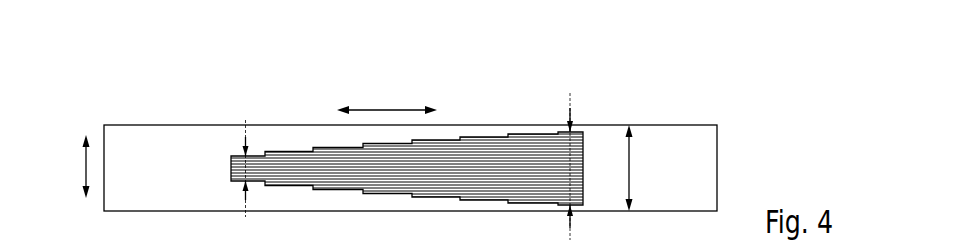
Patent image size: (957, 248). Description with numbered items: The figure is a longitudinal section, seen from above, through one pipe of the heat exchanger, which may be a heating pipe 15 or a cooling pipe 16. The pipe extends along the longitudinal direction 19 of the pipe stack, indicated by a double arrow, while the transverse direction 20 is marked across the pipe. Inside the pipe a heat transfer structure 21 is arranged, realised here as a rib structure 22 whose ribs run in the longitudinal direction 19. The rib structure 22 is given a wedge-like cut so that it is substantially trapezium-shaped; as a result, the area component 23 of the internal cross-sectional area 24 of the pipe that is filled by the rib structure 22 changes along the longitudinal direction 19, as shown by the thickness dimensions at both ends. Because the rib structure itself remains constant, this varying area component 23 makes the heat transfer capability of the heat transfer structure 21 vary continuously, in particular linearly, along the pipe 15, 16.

The heating pipe 15 is at (432, 121).
The cooling pipe 16 is at (679, 122).
The longitudinal direction 19 is at (387, 108).
The transverse direction 20 is at (83, 168).
The heat transfer structure 21 is at (454, 133).
The rib structure 22 is at (586, 145).
The area component 23 is at (244, 138).
The internal cross-sectional area 24 is at (632, 163).